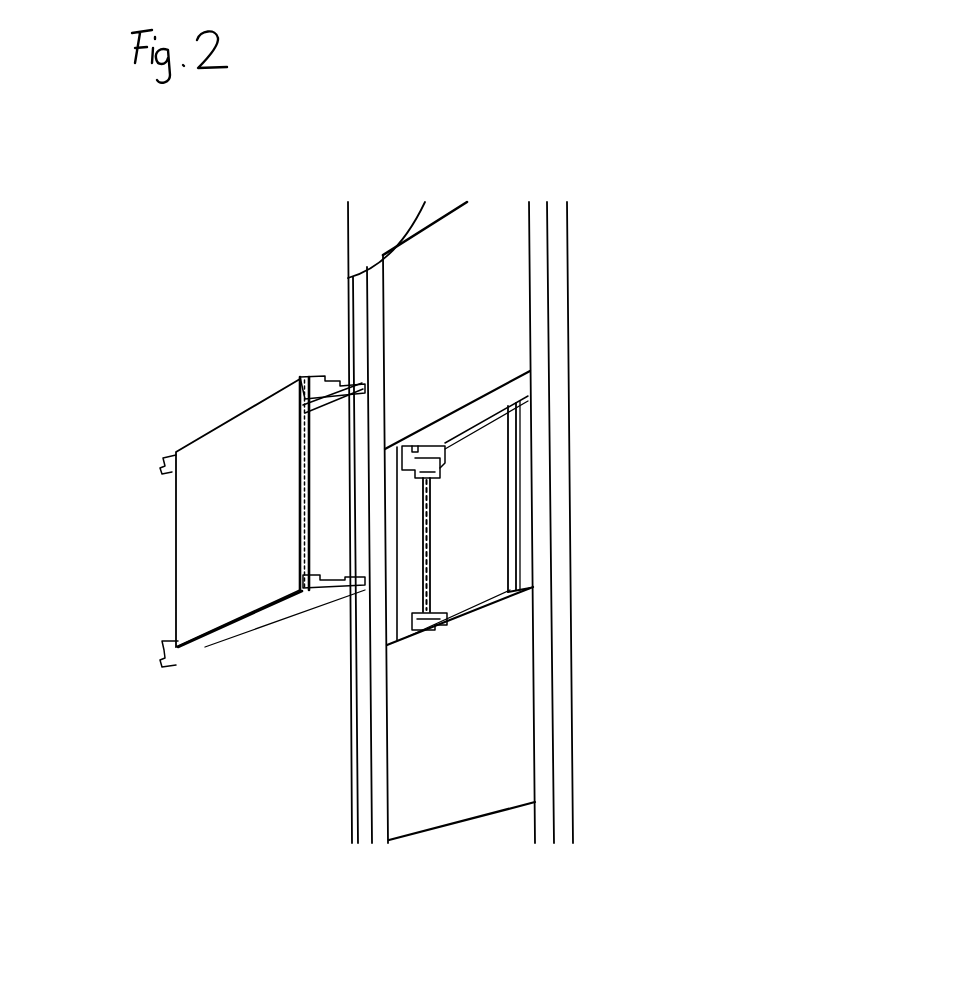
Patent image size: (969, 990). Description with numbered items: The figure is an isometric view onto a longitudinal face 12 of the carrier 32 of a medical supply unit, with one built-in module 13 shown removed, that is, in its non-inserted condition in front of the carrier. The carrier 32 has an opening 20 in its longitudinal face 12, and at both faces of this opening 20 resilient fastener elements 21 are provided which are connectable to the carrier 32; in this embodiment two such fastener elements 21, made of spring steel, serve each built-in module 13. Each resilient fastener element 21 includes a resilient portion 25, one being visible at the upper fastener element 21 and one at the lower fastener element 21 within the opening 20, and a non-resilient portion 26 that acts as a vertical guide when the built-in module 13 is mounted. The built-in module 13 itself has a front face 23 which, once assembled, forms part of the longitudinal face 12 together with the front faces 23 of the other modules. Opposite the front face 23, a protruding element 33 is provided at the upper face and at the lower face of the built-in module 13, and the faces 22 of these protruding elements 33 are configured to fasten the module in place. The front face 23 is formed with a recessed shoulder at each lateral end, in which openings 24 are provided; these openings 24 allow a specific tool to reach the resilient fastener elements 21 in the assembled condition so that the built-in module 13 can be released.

The longitudinal face 12 is at (405, 478).
The built-in module 13 is at (200, 485).
The opening 20 is at (577, 543).
The resilient fastener element 21 is at (593, 494).
The face of protruding element 22 is at (207, 438).
The front face 23 is at (280, 592).
The opening 24 is at (449, 467).
The resilient portion 25 is at (600, 476).
The non-resilient portion 26 is at (610, 343).
The carrier 32 is at (686, 75).
The protruding element 33 is at (211, 688).